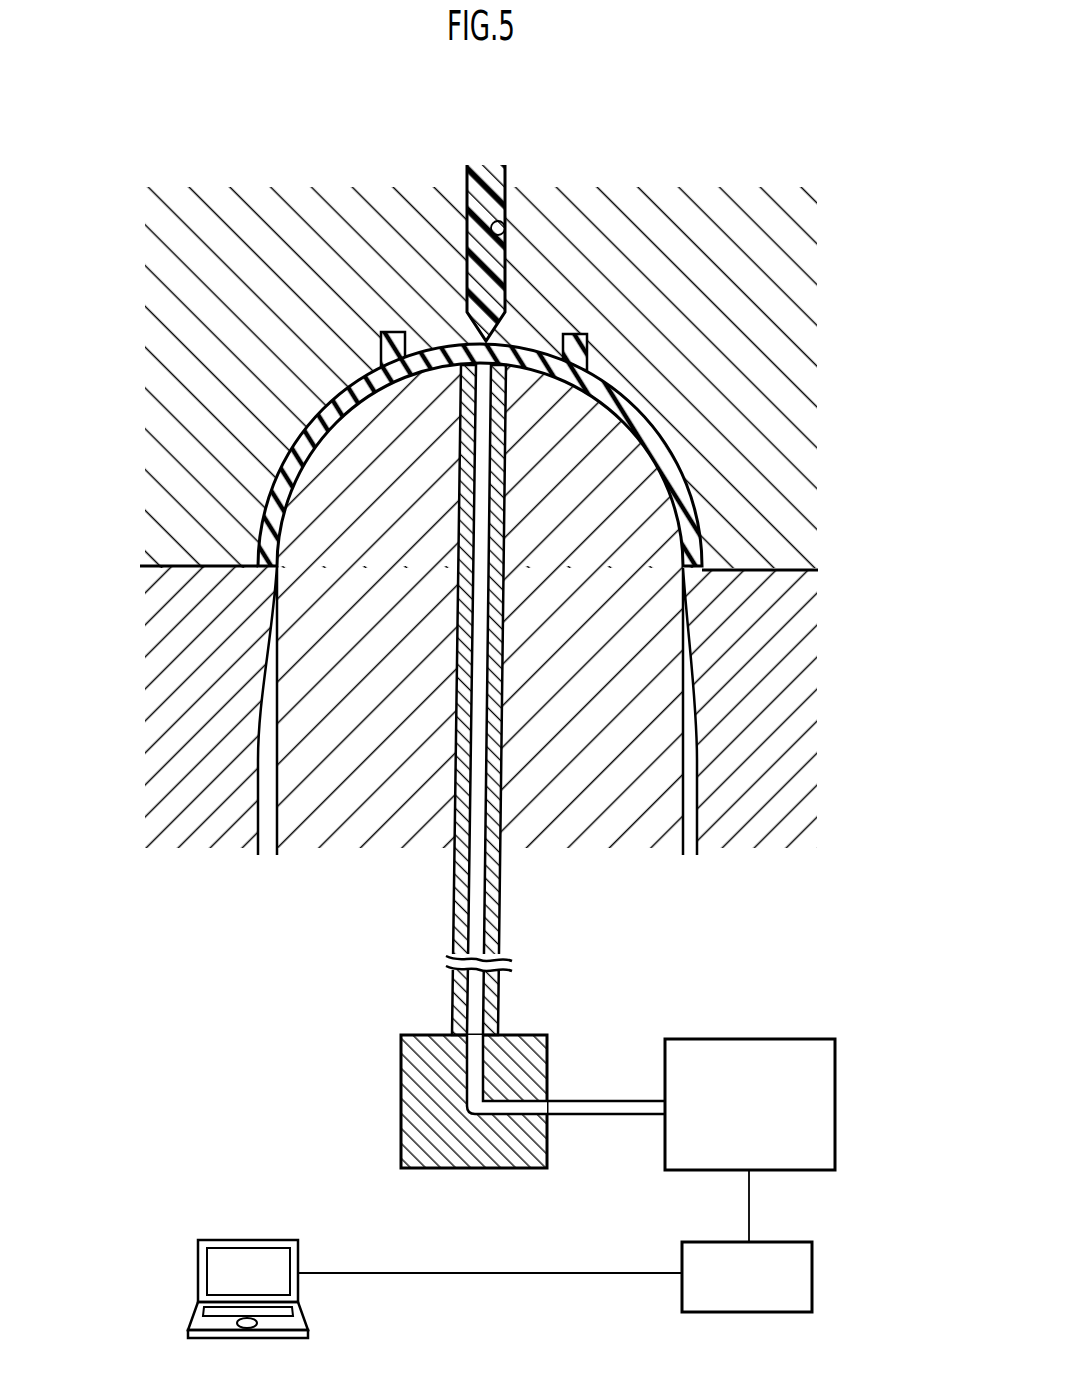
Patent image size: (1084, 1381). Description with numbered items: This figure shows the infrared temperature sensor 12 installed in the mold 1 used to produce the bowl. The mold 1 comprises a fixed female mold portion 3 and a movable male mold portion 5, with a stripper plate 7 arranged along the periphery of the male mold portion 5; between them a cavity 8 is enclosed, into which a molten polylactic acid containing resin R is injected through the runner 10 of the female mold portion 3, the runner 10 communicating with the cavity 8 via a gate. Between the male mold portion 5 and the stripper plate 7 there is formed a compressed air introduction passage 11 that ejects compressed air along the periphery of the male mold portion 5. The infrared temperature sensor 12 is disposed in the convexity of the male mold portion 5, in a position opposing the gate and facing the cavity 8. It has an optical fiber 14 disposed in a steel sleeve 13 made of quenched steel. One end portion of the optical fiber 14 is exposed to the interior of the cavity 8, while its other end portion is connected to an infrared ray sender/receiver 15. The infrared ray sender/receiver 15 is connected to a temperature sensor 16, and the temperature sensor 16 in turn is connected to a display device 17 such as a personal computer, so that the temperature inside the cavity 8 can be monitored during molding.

The mold 1 is at (778, 150).
The female mold portion 3 is at (740, 303).
The male mold portion 5 is at (380, 806).
The stripper plate 7 is at (203, 680).
The cavity 8 is at (687, 478).
The runner 10 is at (505, 230).
The compressed air introduction passage 11 is at (270, 843).
The infrared temperature sensor 12 is at (240, 1120).
The steel sleeve 13 is at (500, 918).
The optical fiber 14 is at (478, 877).
The infrared ray sender/receiver 15 is at (780, 1039).
The temperature sensor 16 is at (773, 1243).
The display device 17 is at (248, 1240).
The polylactic acid containing resin R is at (488, 183).